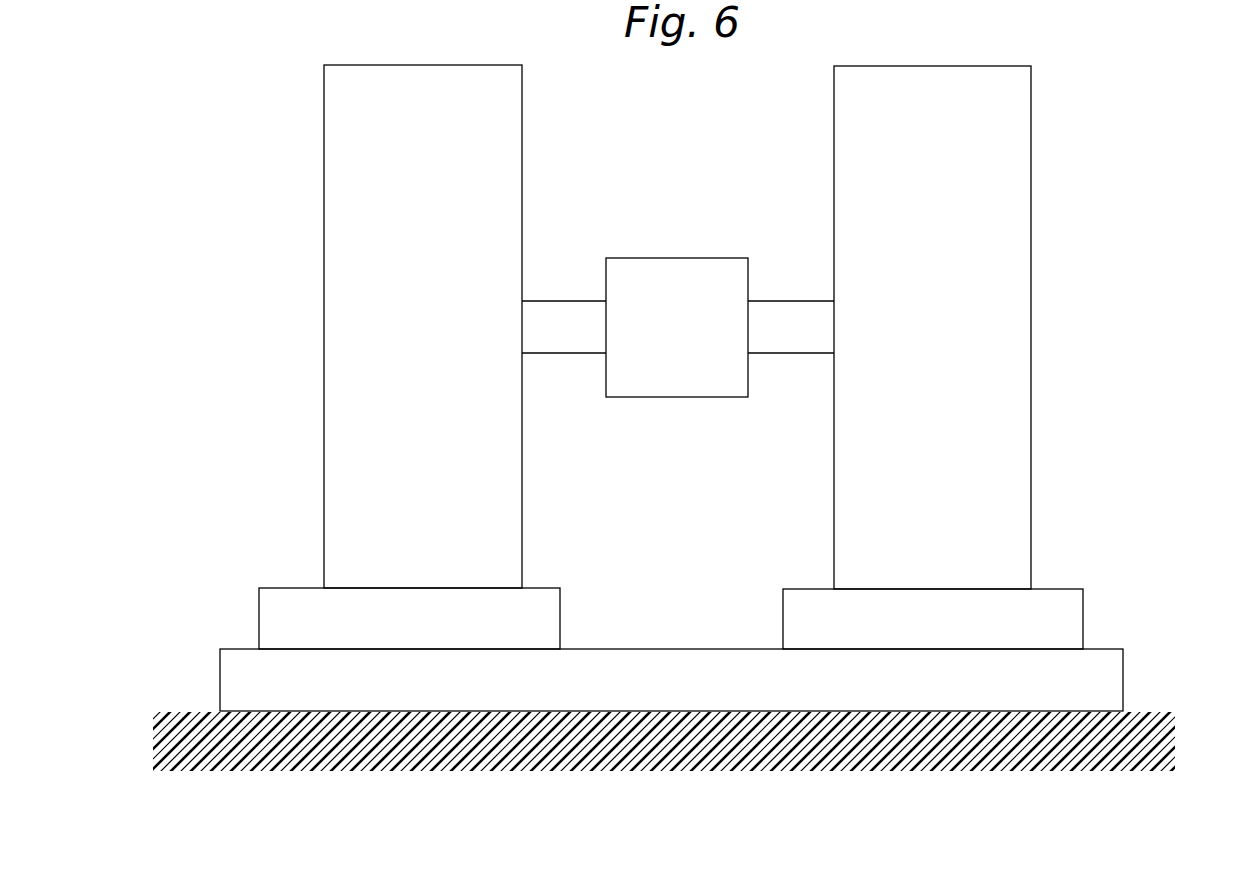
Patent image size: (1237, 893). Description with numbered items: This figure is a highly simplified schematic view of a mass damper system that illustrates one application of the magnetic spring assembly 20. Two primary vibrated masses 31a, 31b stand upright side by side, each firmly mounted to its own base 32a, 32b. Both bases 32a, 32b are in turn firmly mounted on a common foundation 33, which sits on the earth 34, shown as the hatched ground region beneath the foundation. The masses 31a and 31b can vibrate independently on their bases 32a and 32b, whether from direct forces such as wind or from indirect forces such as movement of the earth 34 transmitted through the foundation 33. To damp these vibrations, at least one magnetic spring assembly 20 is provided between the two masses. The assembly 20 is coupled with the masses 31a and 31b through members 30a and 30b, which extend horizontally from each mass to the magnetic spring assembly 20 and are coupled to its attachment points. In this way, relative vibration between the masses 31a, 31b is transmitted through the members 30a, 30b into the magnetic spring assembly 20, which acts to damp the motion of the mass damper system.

The magnetic spring assembly 20 is at (658, 344).
The member 30a is at (563, 296).
The member 30b is at (790, 296).
The mass 31a is at (442, 333).
The mass 31b is at (906, 333).
The base 32a is at (446, 633).
The base 32b is at (971, 633).
The common foundation 33 is at (692, 693).
The earth 34 is at (1163, 705).